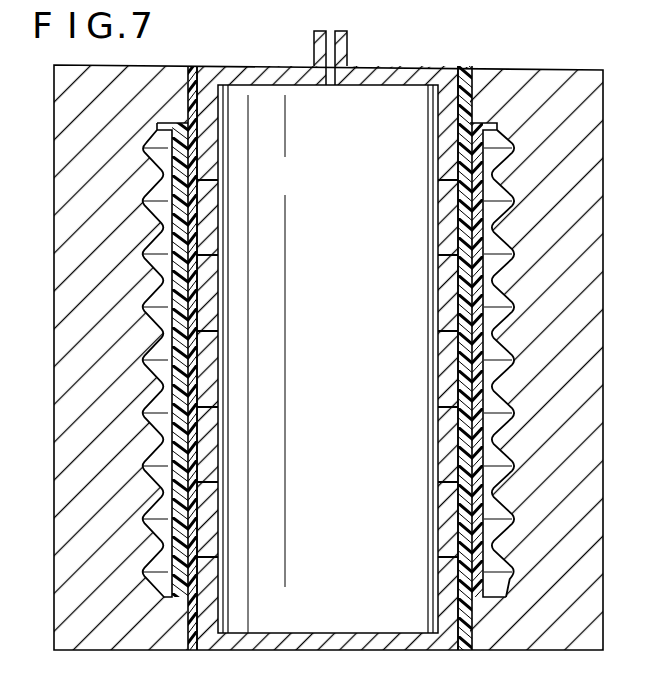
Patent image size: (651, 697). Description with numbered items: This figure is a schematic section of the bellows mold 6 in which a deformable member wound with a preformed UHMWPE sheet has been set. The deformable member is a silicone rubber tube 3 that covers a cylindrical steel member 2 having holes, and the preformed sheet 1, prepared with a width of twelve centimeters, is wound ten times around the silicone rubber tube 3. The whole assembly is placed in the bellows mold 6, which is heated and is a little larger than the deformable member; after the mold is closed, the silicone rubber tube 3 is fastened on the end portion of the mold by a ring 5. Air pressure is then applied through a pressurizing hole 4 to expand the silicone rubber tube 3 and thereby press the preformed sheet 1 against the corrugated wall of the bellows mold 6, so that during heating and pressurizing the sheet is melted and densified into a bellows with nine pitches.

The preformed sheet 1 is at (478, 240).
The cylindrical steel member 2 is at (414, 78).
The silicone rubber tube 3 is at (443, 207).
The pressurizing hole 4 is at (336, 31).
The ring 5 is at (471, 95).
The bellows mold 6 is at (550, 84).